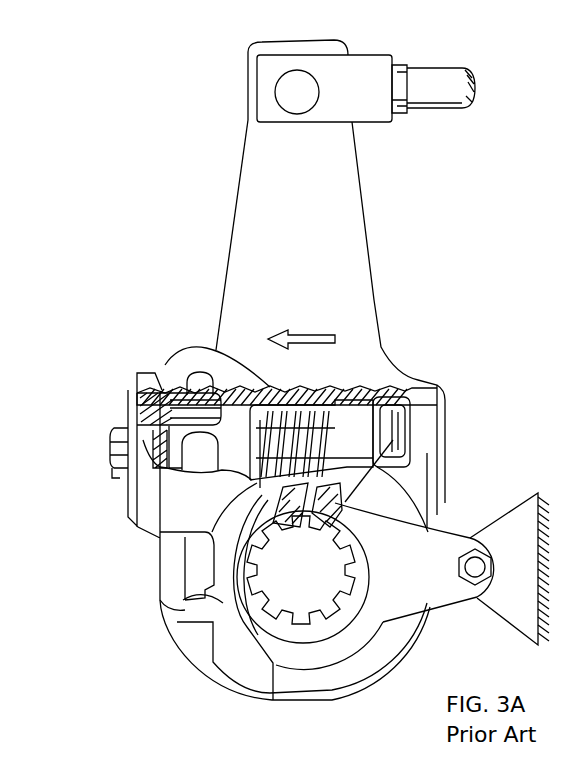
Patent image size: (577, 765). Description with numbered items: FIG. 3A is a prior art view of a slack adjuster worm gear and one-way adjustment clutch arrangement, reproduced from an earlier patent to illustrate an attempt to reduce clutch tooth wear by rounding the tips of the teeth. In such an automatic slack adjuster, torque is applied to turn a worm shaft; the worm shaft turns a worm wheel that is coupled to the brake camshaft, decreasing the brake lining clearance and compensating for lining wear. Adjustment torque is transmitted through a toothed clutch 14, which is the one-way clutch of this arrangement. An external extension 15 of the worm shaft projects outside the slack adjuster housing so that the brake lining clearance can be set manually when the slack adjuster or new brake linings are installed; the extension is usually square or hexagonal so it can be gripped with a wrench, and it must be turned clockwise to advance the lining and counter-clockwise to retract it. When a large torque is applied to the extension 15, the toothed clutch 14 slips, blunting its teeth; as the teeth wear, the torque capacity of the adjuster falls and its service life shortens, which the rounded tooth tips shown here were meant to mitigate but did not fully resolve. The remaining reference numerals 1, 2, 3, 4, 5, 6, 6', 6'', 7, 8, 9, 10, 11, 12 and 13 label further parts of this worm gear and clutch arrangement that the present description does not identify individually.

The lever arm 1 is at (357, 230).
The worm gear 2 is at (360, 496).
The pin 3 is at (452, 103).
The worm shaft 4 is at (360, 442).
The end cap 5 is at (440, 402).
The housing 6 is at (295, 591).
The control lever 6' is at (414, 578).
The housing portion 6'' is at (158, 606).
The fixed bracket 7 is at (516, 517).
The boss 8 is at (200, 553).
The dome 9 is at (191, 372).
The housing cover 10 is at (162, 390).
The bushing 11 is at (140, 413).
The plate 12 is at (130, 508).
The housing projection 13 is at (128, 390).
The toothed clutch 14 is at (115, 440).
The extension 15 is at (118, 477).